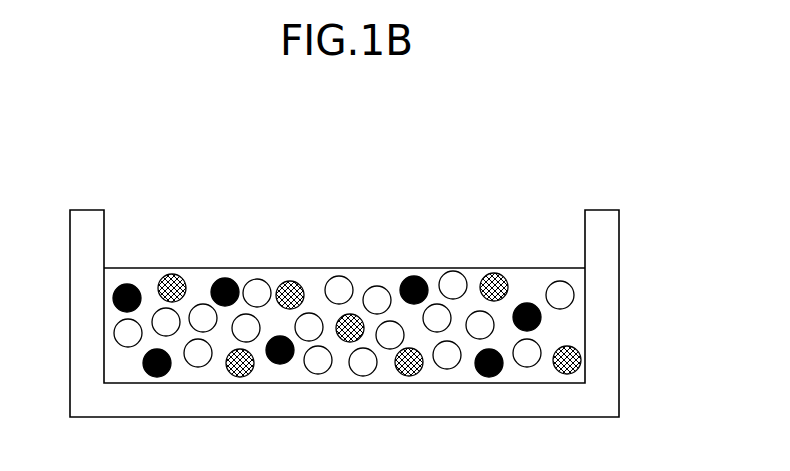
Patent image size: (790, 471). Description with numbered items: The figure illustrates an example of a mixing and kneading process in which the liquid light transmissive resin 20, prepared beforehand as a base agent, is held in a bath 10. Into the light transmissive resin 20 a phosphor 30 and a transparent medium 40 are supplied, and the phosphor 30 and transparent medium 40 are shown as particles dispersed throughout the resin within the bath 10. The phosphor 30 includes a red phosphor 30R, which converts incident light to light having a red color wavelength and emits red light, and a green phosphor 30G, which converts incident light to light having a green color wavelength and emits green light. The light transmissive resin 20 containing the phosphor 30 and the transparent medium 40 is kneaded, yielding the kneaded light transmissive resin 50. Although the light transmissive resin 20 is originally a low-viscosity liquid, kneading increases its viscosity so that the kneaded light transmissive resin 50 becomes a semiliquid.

The bath 10 is at (608, 322).
The light transmissive resin 20 is at (516, 282).
The phosphor 30 is at (367, 230).
The red phosphor 30R is at (226, 278).
The green phosphor 30G is at (296, 281).
The transparent medium 40 is at (455, 272).
The kneaded light transmissive resin 50 is at (568, 182).